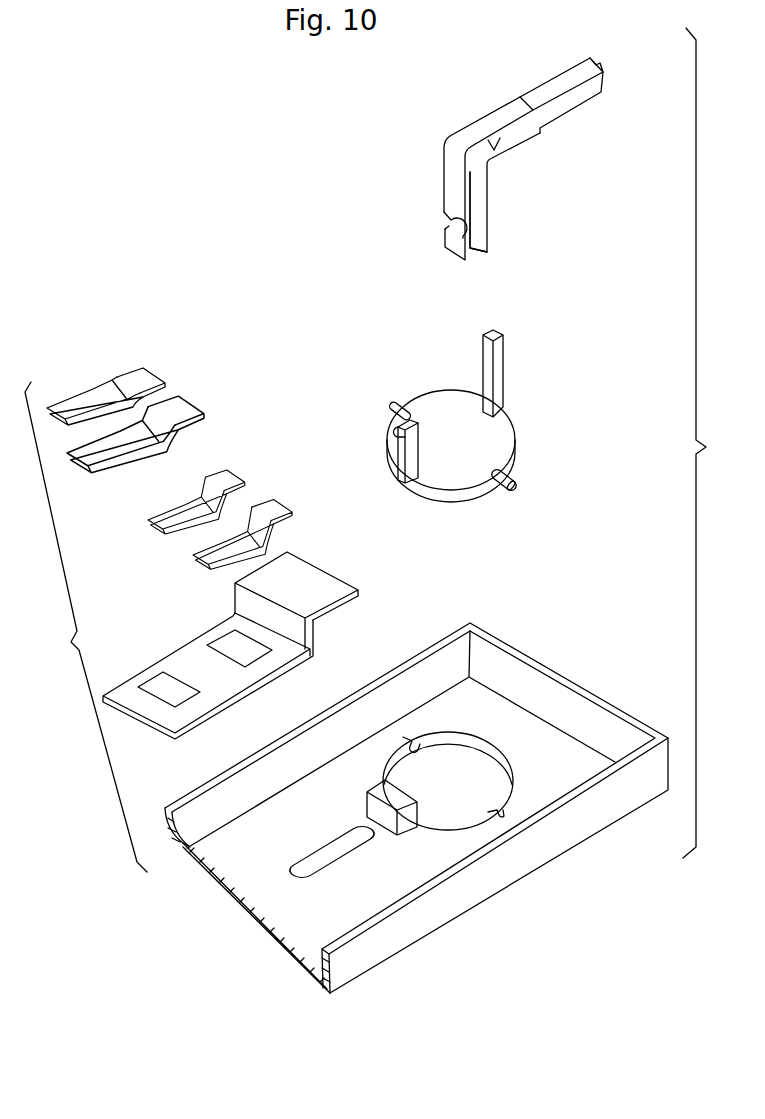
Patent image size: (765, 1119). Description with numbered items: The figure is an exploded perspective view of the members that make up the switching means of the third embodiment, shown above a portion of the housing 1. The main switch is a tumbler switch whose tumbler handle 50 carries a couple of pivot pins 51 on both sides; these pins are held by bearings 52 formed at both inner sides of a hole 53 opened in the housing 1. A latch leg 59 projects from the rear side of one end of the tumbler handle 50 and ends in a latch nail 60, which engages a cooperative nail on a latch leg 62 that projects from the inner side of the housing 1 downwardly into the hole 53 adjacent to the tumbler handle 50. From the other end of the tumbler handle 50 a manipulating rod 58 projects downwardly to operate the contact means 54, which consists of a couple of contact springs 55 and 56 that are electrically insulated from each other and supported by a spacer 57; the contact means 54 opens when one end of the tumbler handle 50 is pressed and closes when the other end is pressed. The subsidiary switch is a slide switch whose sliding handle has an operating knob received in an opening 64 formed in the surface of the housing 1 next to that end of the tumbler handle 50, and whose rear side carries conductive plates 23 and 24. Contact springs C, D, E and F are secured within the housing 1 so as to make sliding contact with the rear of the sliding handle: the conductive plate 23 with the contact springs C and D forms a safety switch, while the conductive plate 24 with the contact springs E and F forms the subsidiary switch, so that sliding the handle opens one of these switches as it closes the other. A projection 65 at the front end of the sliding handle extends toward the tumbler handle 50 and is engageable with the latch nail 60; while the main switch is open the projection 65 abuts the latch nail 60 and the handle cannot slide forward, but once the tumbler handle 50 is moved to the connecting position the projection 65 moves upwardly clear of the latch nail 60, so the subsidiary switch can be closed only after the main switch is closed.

The housing 1 is at (608, 815).
The conductive plate 23 is at (220, 640).
The conductive plate 24 is at (155, 682).
The tumbler handle 50 is at (497, 440).
The pivot pins 51 is at (397, 403).
The bearings 52 is at (405, 737).
The hole 53 is at (483, 763).
The contact means 54 is at (523, 172).
The contact spring 55 is at (477, 190).
The contact spring 56 is at (458, 228).
The spacer 57 is at (564, 82).
The manipulating rod 58 is at (500, 352).
The latch leg 59 is at (407, 458).
The latch nail 60 is at (402, 433).
The latch leg 62 is at (387, 815).
The opening 64 is at (337, 857).
The projection 65 is at (325, 582).
The contact spring C is at (232, 483).
The contact spring D is at (278, 510).
The contact spring E is at (146, 375).
The contact spring F is at (189, 410).